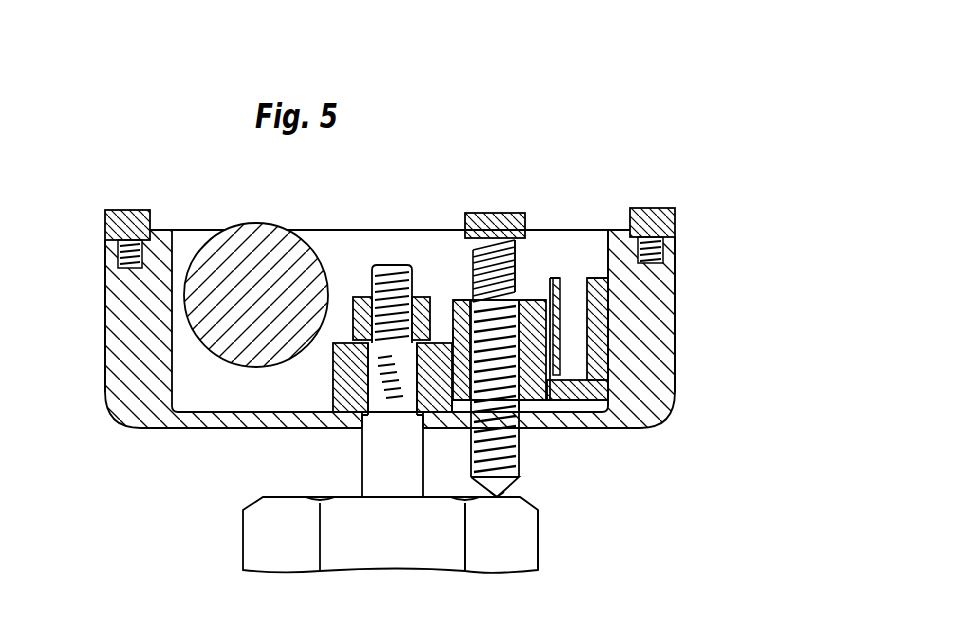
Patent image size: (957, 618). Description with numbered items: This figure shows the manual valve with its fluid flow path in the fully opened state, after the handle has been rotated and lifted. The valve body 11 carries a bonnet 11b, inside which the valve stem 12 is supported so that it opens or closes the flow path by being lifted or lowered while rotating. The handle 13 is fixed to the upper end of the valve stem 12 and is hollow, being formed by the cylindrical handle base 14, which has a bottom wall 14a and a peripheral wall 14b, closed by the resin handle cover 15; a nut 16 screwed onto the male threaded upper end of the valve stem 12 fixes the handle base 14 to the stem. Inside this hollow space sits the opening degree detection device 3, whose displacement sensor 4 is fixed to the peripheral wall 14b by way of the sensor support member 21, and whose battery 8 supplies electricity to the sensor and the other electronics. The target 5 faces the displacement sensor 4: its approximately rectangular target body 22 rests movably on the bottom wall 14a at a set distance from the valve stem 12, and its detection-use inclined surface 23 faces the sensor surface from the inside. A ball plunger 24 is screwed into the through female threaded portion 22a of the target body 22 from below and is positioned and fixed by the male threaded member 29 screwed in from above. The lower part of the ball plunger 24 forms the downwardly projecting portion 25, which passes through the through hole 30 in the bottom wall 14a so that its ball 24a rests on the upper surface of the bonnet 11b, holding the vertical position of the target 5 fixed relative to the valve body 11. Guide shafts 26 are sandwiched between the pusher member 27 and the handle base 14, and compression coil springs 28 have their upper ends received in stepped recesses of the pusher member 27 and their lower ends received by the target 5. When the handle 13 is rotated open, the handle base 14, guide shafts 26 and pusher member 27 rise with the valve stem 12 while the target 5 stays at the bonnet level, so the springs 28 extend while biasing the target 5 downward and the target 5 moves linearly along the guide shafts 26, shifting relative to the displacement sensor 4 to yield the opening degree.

The opening degree detection device 3 is at (587, 207).
The displacement sensor 4 is at (556, 335).
The target 5 is at (535, 300).
The battery 8 is at (250, 231).
The valve body 11 is at (538, 556).
The bonnet 11b is at (525, 518).
The valve stem 12 is at (370, 445).
The handle 13 is at (105, 291).
The handle base 14 is at (122, 363).
The bottom wall 14a is at (220, 420).
The peripheral wall 14b is at (662, 345).
The handle cover 15 is at (107, 214).
The nut 16 is at (362, 298).
The sensor support member 21 is at (593, 380).
The target body 22 is at (466, 301).
The through female threaded portion 22a is at (477, 303).
The detection-use inclined surface 23 is at (558, 307).
The ball plunger 24 is at (483, 403).
The ball 24a is at (498, 497).
The downwardly projecting portion 25 is at (497, 480).
The guide shaft 26 is at (517, 263).
The pusher member 27 is at (485, 213).
The compression coil spring 28 is at (499, 250).
The male threaded member 29 is at (480, 334).
The through hole 30 is at (525, 425).